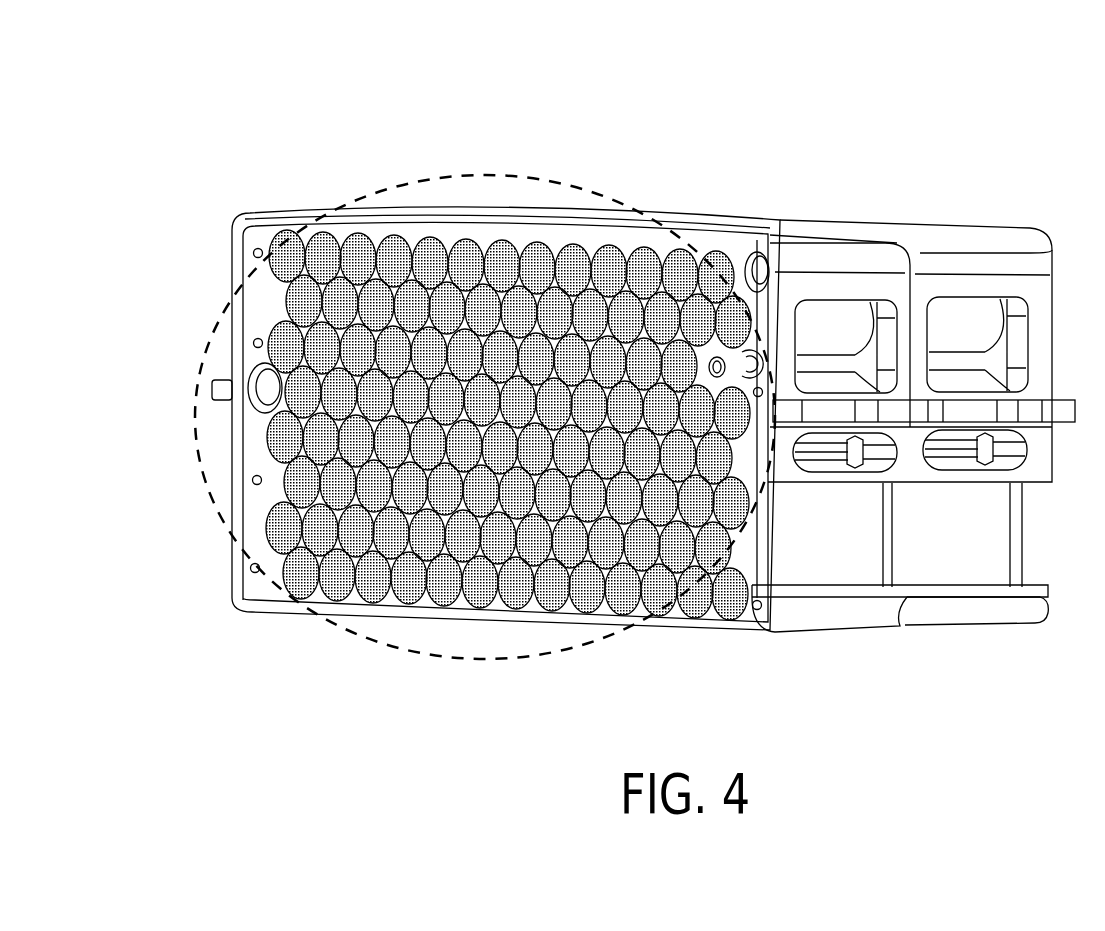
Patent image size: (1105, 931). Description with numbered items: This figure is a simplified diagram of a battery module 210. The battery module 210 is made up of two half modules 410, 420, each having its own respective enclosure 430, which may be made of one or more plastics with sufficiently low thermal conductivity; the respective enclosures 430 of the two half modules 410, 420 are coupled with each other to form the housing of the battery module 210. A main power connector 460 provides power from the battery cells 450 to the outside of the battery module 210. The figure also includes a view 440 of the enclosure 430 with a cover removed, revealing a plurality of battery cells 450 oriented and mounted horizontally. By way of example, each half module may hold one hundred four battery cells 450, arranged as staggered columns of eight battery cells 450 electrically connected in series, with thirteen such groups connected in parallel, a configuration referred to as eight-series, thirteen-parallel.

The battery module 210 is at (267, 80).
The half module 410 is at (892, 642).
The half module 420 is at (1040, 642).
The enclosure 430 is at (968, 257).
The view 440 is at (441, 658).
The battery cells 450 is at (573, 275).
The main power connector 460 is at (737, 362).